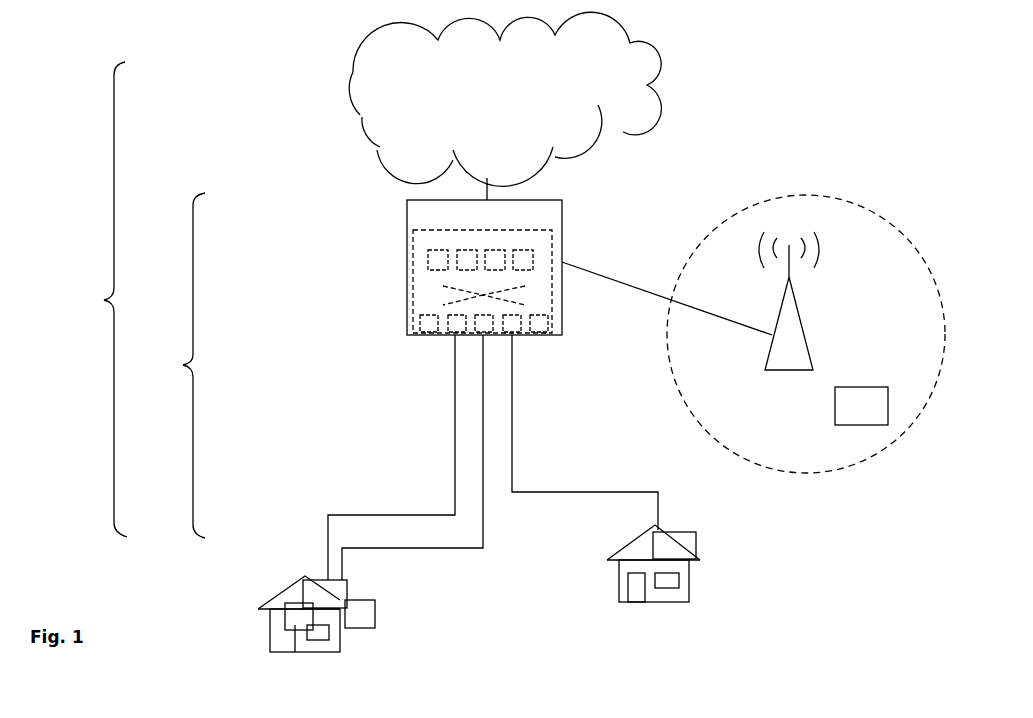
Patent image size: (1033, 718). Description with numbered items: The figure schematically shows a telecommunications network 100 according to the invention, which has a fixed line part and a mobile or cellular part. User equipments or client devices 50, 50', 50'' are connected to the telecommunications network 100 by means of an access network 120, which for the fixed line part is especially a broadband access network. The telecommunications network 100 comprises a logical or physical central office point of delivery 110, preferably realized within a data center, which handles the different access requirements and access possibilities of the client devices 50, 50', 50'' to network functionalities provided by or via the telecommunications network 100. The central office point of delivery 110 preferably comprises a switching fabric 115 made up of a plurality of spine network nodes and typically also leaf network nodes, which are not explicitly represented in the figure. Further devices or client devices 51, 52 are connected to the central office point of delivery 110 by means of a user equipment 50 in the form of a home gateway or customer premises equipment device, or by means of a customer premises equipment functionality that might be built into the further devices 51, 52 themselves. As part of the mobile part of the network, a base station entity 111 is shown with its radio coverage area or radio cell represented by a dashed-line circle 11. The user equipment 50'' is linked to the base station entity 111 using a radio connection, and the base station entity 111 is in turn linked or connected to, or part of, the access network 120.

The telecommunications network 100 is at (100, 299).
The access network 120 is at (172, 365).
The central office point of delivery 110 is at (484, 267).
The switching fabric 115 is at (482, 281).
The radio cell 11 is at (675, 375).
The base station entity 111 is at (789, 301).
The user equipment 50 is at (316, 614).
The further device 51 is at (360, 614).
The further device 52 is at (299, 616).
The user equipment 50' is at (653, 563).
The user equipment 50'' is at (861, 406).